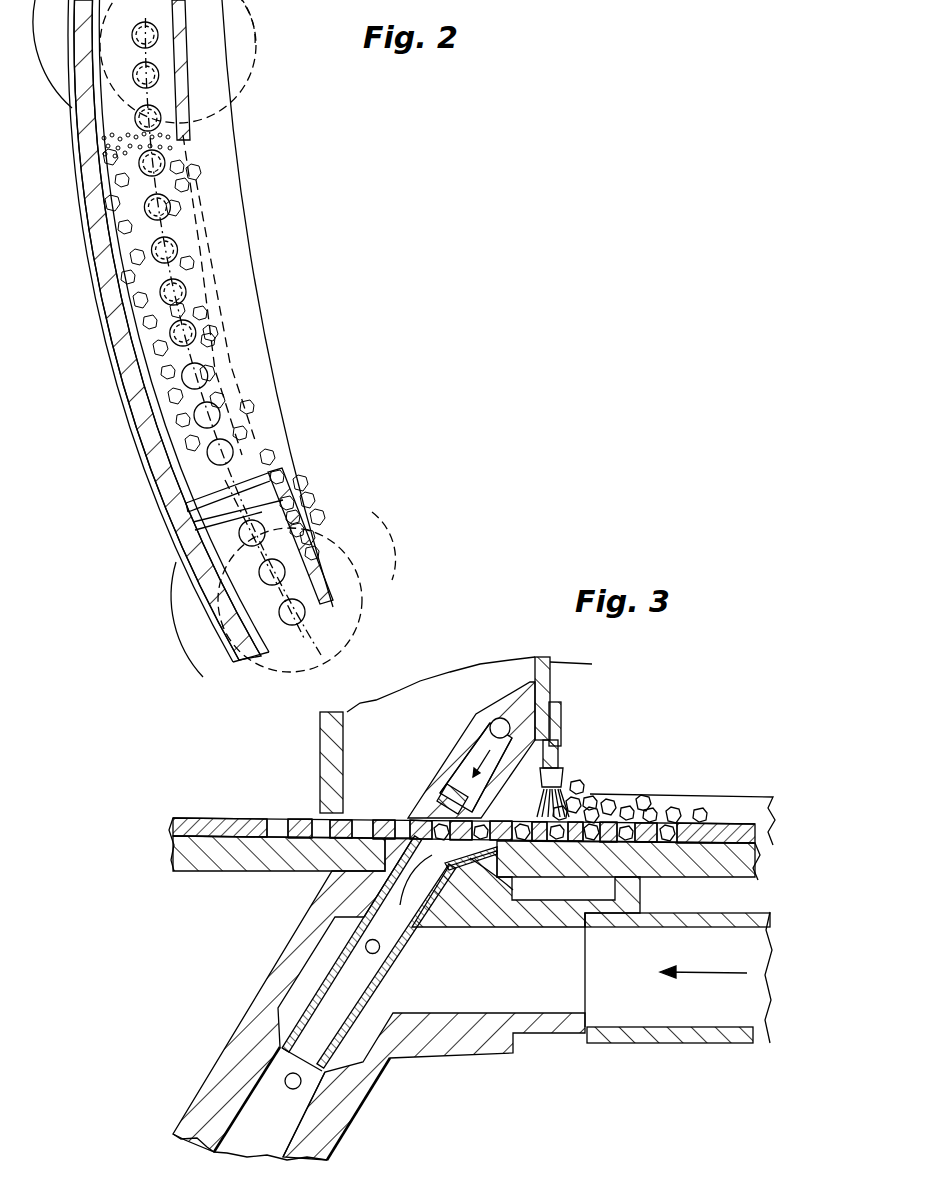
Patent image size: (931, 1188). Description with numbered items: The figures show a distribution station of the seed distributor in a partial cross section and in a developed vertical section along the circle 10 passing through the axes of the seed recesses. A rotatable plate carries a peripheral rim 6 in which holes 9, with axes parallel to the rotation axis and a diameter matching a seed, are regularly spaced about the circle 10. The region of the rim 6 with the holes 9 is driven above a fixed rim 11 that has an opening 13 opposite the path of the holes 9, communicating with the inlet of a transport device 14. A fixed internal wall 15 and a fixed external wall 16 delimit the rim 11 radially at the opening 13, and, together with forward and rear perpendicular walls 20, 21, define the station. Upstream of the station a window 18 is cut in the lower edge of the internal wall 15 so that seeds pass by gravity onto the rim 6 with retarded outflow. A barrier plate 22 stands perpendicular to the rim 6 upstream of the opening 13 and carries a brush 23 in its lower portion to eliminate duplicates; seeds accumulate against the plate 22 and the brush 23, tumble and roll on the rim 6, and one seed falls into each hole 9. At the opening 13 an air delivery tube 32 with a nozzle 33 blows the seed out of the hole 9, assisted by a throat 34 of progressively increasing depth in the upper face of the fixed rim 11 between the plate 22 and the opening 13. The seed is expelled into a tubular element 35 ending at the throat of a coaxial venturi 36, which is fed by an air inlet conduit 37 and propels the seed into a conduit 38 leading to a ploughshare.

In FIG. 2, the peripheral rim 6 is at (167, 398).
In FIG. 3, the peripheral rim 6 is at (717, 825).
In FIG. 2, the holes 9 is at (240, 543).
In FIG. 3, the holes 9 is at (660, 825).
In FIG. 2, the circle 10 is at (257, 447).
In FIG. 3, the fixed rim 11 is at (713, 878).
In FIG. 2, the opening 13 is at (157, 15).
In FIG. 3, the opening 13 is at (385, 868).
In FIG. 2, the transport device 14 is at (207, 50).
In FIG. 2, the fixed internal wall 15 is at (180, 98).
In FIG. 2, the fixed external wall 16 is at (103, 283).
In FIG. 2, the window 18 is at (207, 287).
In FIG. 3, the window 18 is at (730, 803).
In FIG. 2, the forward perpendicular wall 20 is at (187, 487).
In FIG. 3, the forward perpendicular wall 20 is at (320, 740).
In FIG. 3, the rear perpendicular wall 21 is at (550, 682).
In FIG. 3, the barrier plate 22 is at (555, 727).
In FIG. 2, the brush 23 is at (172, 146).
In FIG. 3, the brush 23 is at (540, 800).
In FIG. 3, the air delivery tube 32 is at (492, 727).
In FIG. 3, the nozzle 33 is at (443, 795).
In FIG. 3, the throat 34 is at (520, 888).
In FIG. 3, the tubular element 35 is at (340, 913).
In FIG. 3, the venturi 36 is at (357, 1047).
In FIG. 3, the air inlet conduit 37 is at (660, 1040).
In FIG. 3, the conduit 38 is at (335, 1113).